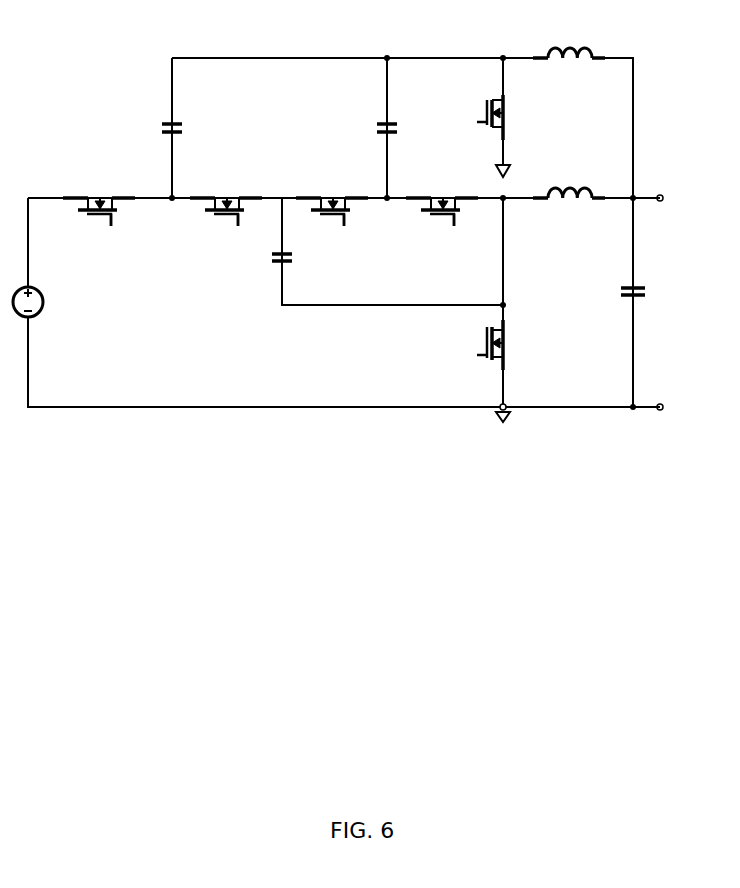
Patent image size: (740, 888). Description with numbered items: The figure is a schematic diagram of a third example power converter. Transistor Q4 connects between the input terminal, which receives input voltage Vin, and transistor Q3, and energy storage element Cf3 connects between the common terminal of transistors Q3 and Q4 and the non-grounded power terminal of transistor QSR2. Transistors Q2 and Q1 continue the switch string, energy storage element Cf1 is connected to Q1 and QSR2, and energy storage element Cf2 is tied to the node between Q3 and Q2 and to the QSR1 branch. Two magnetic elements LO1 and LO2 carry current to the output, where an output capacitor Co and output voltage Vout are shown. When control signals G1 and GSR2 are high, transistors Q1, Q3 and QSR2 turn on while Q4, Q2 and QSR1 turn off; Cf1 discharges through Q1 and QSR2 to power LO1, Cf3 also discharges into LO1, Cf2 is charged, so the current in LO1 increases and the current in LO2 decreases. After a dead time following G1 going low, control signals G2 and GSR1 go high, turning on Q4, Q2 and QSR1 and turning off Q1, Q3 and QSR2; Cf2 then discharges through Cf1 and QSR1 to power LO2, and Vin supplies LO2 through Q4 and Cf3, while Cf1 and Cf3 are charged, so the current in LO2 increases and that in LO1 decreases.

The transistor Q1 is at (442, 198).
The transistor Q2 is at (332, 198).
The transistor Q3 is at (226, 196).
The transistor Q4 is at (99, 199).
The control signal G1 is at (348, 235).
The control signal G2 is at (239, 236).
The energy storage element Cf1 is at (399, 119).
The energy storage element Cf2 is at (299, 261).
The energy storage element Cf3 is at (191, 131).
The transistor QSR1 is at (525, 345).
The transistor QSR2 is at (520, 117).
The control signal GSR1 is at (454, 354).
The control signal GSR2 is at (458, 119).
The magnetic element LO1 is at (569, 179).
The magnetic element LO2 is at (569, 41).
The output capacitor Co is at (614, 292).
The input voltage Vin is at (46, 302).
The output voltage Vout is at (669, 302).